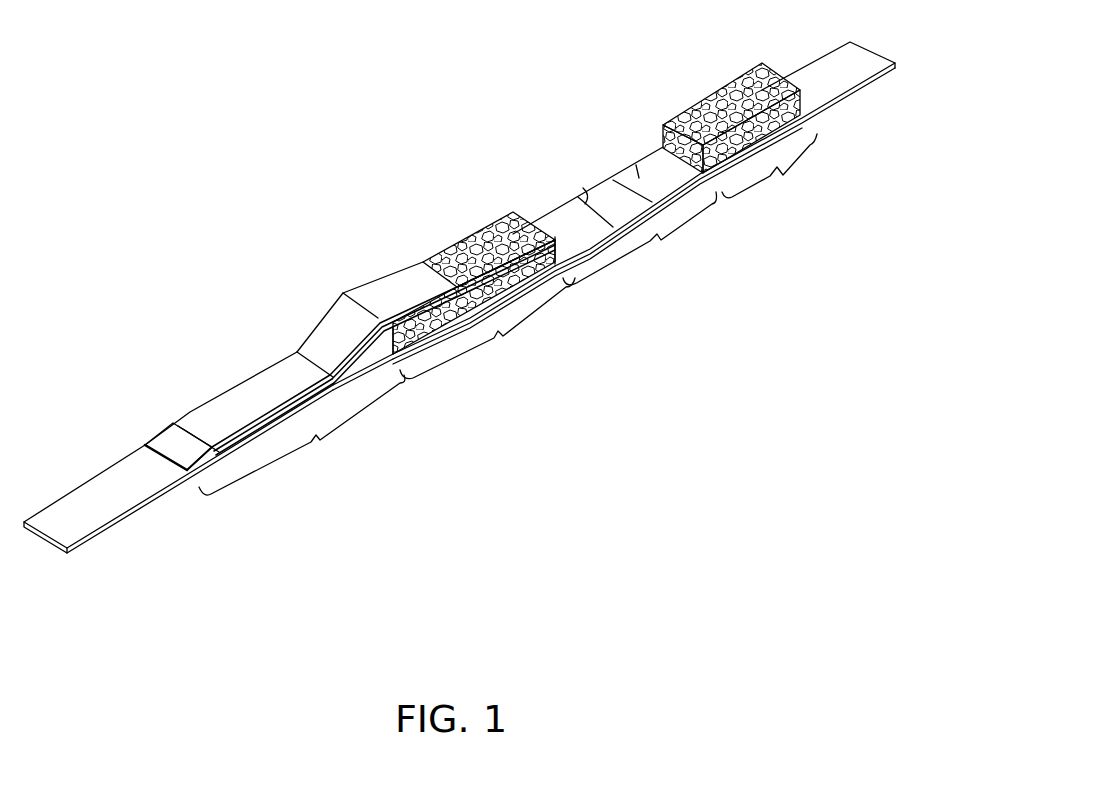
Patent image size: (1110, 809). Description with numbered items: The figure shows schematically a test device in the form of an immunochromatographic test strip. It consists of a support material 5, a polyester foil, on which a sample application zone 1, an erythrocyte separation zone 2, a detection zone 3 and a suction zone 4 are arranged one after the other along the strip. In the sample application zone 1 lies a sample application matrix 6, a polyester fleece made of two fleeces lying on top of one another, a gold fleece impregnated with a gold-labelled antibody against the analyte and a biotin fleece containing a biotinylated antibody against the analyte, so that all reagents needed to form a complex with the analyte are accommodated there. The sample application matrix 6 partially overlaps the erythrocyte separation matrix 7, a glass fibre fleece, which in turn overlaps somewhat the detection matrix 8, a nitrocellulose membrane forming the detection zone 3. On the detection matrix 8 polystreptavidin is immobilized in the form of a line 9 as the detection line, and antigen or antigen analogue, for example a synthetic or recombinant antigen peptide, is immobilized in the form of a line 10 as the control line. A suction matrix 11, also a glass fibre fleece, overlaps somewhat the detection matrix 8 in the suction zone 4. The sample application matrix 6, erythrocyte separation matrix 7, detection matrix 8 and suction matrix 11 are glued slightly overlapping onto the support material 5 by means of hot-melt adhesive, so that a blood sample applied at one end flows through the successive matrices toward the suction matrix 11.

The sample application zone 1 is at (302, 435).
The erythrocyte separation zone 2 is at (487, 328).
The detection zone 3 is at (644, 213).
The suction zone 4 is at (808, 122).
The support material 5 is at (97, 490).
The sample application matrix 6 is at (343, 397).
The erythrocyte separation matrix 7 is at (465, 253).
The detection matrix 8 is at (636, 165).
The first linear immobilization zone 9 is at (583, 188).
The second linear immobilization zone 10 is at (613, 186).
The suction matrix 11 is at (707, 102).